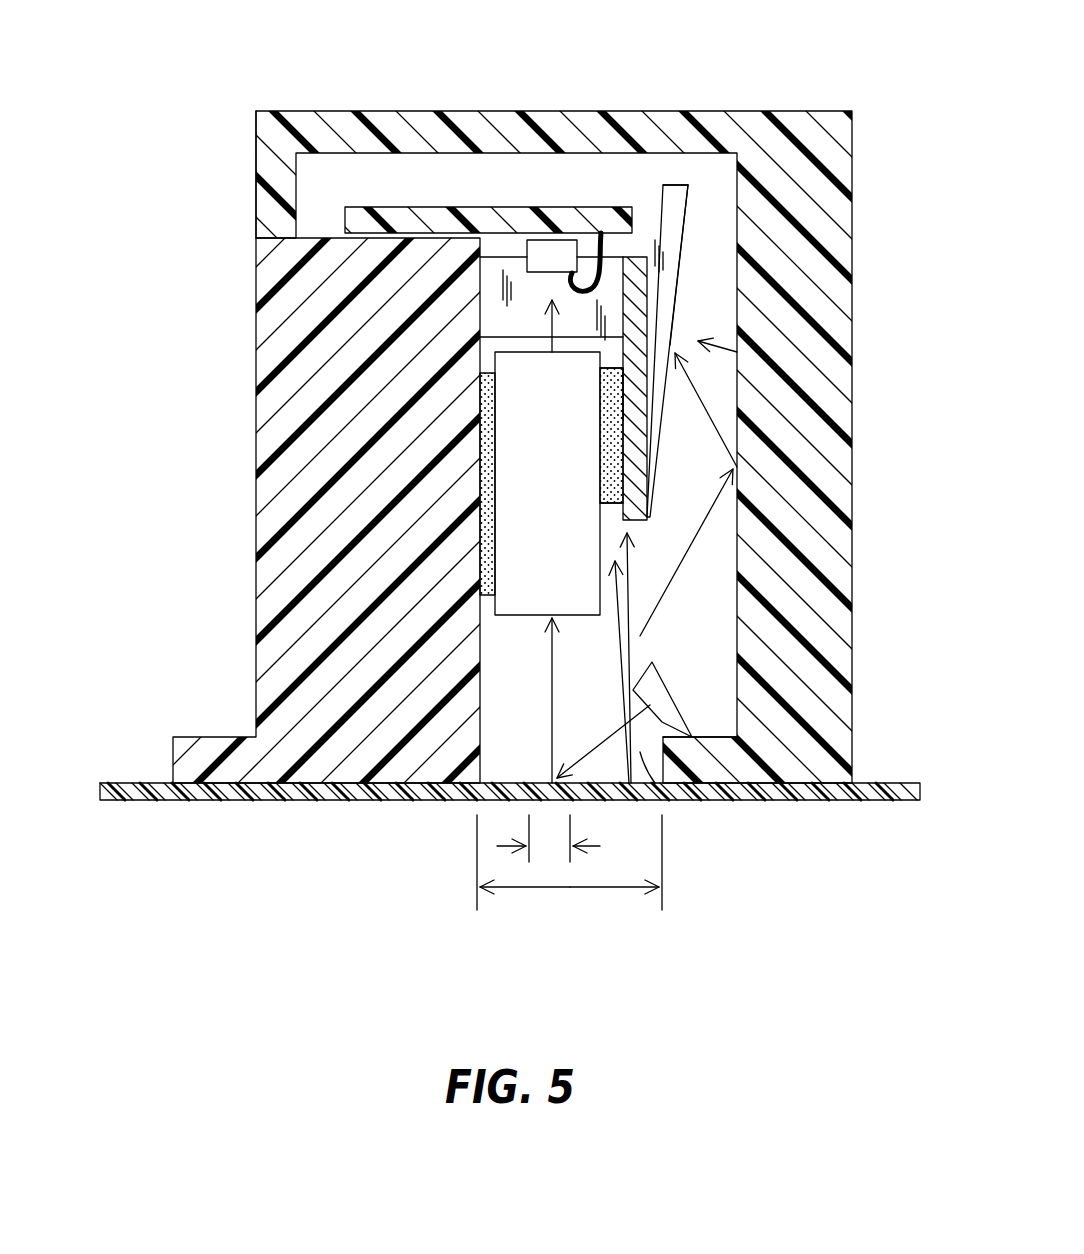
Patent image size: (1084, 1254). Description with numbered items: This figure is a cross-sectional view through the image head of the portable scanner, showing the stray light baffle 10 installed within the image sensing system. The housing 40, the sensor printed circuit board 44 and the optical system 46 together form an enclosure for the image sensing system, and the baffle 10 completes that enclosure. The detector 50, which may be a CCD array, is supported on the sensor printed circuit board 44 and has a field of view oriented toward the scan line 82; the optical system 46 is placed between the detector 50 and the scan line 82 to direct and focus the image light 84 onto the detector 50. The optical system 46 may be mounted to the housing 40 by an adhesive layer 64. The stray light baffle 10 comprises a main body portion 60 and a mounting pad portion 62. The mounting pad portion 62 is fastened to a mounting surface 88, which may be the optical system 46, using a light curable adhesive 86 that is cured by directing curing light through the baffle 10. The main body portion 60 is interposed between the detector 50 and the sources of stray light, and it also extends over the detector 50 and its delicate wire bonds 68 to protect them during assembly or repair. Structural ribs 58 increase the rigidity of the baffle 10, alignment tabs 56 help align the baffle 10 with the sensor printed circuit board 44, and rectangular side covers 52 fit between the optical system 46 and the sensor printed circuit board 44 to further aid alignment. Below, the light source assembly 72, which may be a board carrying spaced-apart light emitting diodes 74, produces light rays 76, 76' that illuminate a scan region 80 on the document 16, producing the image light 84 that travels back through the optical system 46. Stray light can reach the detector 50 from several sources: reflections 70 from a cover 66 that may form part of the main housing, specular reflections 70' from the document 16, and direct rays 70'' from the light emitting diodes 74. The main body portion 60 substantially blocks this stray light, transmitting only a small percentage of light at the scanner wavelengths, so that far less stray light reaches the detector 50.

The stray light baffle 10 is at (737, 352).
The document 16 is at (132, 783).
The housing 40 is at (256, 578).
The sensor printed circuit board 44 is at (383, 207).
The optical system 46 is at (530, 505).
The detector 50 is at (524, 240).
The side covers 52 is at (497, 257).
The alignment tabs 56 is at (690, 193).
The structural ribs 58 is at (684, 230).
The main body portion 60 is at (656, 312).
The mounting pad portion 62 is at (622, 513).
The adhesive layer 64 is at (488, 583).
The cover 66 is at (256, 180).
The wire bonds 68 is at (645, 290).
The stray light reflections 70 is at (793, 410).
The specular reflections 70' is at (773, 658).
The direct rays 70'' is at (796, 553).
The light source assembly 72 is at (673, 700).
The light emitting diodes 74 is at (665, 740).
The light ray 76 is at (603, 722).
The light ray 76' is at (685, 814).
The scan region 80 is at (570, 887).
The scan line 82 is at (497, 846).
The image light 84 is at (550, 700).
The light curable adhesive 86 is at (605, 438).
The mounting surface 88 is at (605, 415).